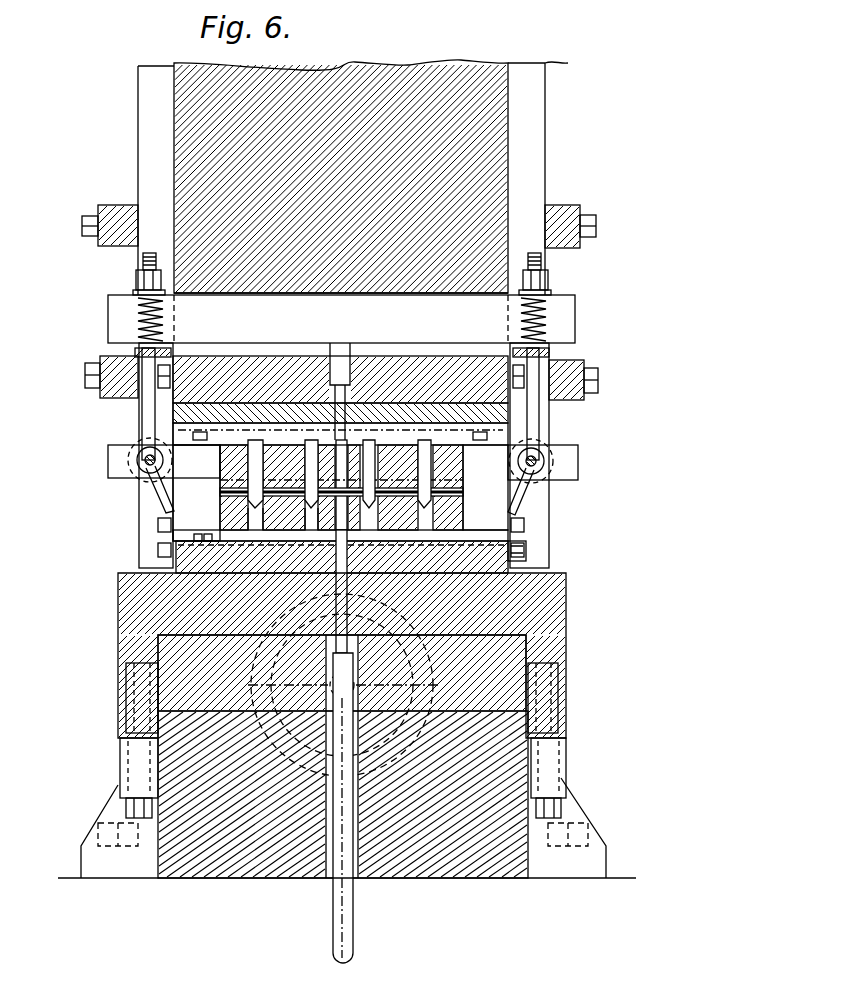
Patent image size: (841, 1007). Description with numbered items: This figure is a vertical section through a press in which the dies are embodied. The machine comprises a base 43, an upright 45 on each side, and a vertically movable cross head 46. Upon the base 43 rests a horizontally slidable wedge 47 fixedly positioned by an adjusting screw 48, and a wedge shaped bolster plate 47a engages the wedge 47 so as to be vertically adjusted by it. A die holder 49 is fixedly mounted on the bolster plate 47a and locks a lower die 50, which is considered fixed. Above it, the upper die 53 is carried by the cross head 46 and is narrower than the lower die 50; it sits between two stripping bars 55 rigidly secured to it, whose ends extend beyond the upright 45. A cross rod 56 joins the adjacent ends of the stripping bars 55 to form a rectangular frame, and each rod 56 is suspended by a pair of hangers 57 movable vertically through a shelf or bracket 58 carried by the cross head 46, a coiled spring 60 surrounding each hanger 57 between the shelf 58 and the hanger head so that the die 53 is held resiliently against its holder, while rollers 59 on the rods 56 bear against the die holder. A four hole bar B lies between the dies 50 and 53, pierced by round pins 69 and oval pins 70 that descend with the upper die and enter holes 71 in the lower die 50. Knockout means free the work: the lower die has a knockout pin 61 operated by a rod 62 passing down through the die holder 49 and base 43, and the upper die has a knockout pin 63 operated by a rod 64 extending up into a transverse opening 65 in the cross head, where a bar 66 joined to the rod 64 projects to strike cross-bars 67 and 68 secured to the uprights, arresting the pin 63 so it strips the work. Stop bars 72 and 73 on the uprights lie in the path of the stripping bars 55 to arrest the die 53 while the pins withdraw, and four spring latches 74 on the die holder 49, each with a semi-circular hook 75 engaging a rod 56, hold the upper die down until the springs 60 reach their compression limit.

The base 43 is at (495, 866).
The upright 45 is at (527, 146).
The cross head 46 is at (461, 55).
The wedge 47 is at (343, 774).
The bolster plate 47a is at (560, 597).
The adjusting screw 48 is at (295, 676).
The die holder 49 is at (168, 558).
The lower die 50 is at (457, 516).
The upper die 53 is at (458, 446).
The stripping bar 55 is at (100, 455).
The cross rod 56 is at (140, 467).
The hanger 57 is at (140, 390).
The shelf or bracket 58 is at (128, 344).
The roller 59 is at (120, 450).
The coiled spring 60 is at (128, 302).
The knockout pin 61 is at (340, 530).
The rod 62 is at (346, 906).
The knockout pin 63 is at (336, 452).
The rod 64 is at (331, 345).
The transverse opening 65 is at (224, 275).
The bar 66 is at (270, 300).
The cross-bar 67 is at (100, 197).
The cross-bar 68 is at (566, 197).
The round pin 69 is at (308, 462).
The oval pin 70 is at (245, 500).
The hole 71 is at (244, 515).
The stop bar 72 is at (100, 380).
The stop bar 73 is at (578, 393).
The spring latch 74 is at (150, 487).
The hook 75 is at (118, 468).
The four hole bar B is at (458, 490).